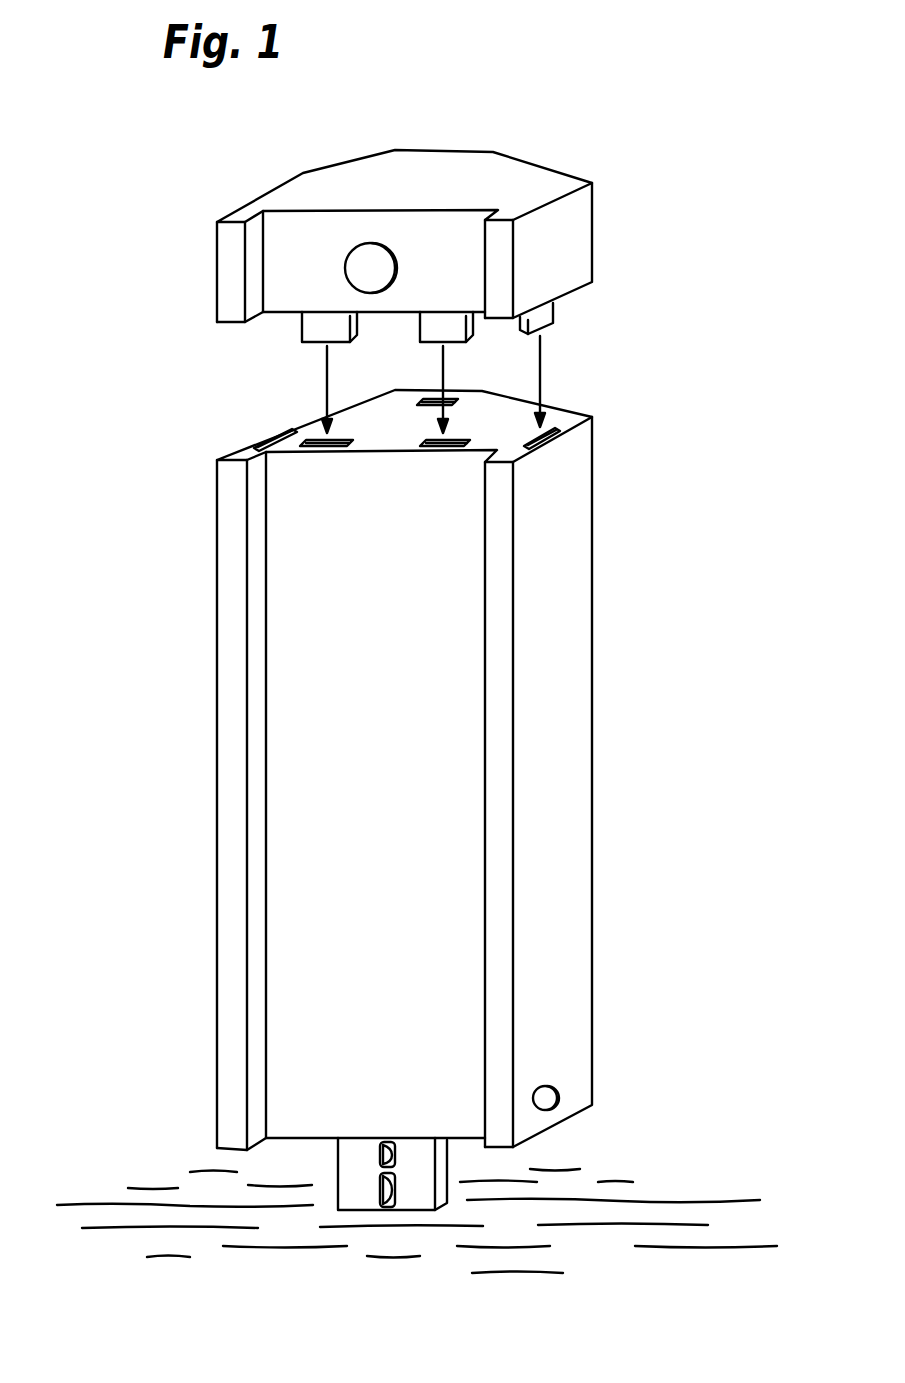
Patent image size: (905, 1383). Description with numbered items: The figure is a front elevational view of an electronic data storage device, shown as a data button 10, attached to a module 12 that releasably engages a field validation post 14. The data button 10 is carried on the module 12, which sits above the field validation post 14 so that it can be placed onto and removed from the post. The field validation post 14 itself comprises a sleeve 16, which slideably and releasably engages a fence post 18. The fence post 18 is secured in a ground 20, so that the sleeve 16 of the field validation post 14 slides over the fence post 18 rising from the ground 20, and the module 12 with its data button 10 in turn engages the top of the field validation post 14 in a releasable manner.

The data button 10 is at (377, 241).
The module 12 is at (448, 226).
The field validation post 14 is at (490, 770).
The sleeve 16 is at (592, 620).
The fence post 18 is at (460, 1170).
The ground 20 is at (692, 1181).